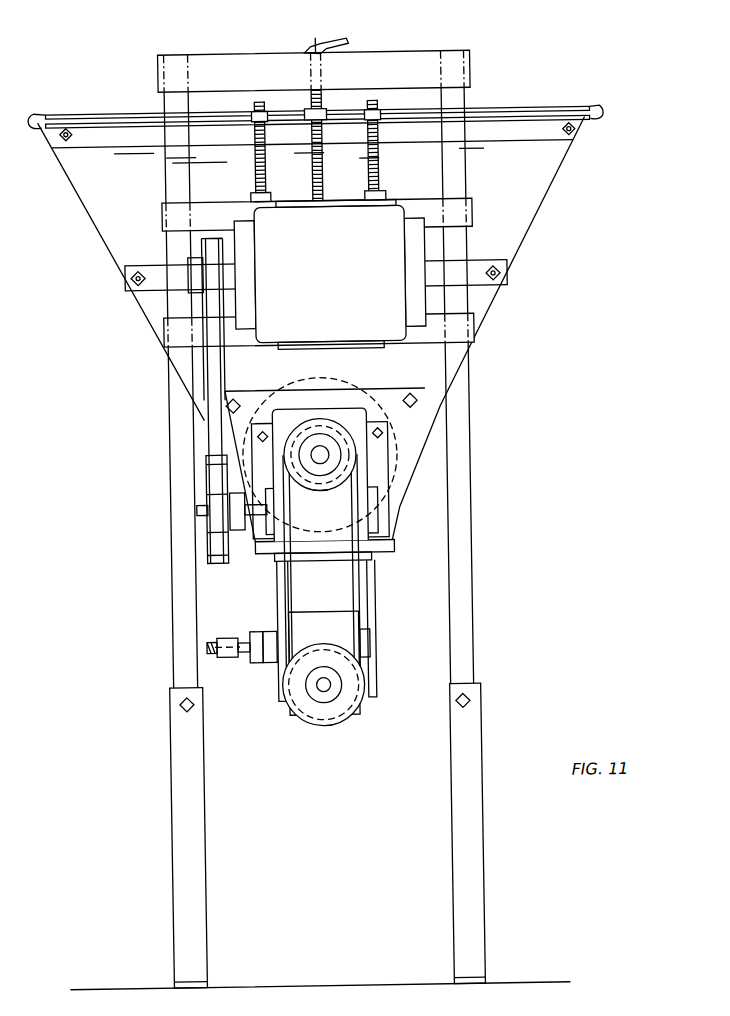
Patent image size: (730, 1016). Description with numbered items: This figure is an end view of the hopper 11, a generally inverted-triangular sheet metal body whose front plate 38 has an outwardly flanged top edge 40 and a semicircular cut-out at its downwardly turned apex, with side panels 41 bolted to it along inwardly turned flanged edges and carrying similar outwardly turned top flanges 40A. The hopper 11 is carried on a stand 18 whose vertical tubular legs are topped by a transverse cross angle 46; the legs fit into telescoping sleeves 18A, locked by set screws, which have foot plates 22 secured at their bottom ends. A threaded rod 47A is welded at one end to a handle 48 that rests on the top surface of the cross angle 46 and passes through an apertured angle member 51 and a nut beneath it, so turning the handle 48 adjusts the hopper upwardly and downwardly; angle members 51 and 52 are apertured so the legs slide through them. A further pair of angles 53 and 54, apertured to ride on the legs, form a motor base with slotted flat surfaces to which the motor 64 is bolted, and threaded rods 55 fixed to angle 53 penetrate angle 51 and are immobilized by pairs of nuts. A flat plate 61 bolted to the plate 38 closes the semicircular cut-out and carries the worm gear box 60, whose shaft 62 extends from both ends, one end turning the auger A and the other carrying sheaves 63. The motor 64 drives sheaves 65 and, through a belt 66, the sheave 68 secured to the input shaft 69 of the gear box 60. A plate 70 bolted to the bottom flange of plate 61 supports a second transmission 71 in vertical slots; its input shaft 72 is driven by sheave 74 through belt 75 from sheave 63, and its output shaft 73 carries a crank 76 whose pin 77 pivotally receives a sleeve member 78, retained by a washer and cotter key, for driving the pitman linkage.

The hopper 11 is at (544, 99).
The stand 18 is at (178, 605).
The telescoping stand sleeve 18A is at (172, 817).
The foot plate 22 is at (185, 977).
The front plate 38 is at (121, 189).
The outwardly flanged top edge 40 is at (572, 110).
The outwardly turned top flange 40A is at (613, 117).
The side panel 41 is at (108, 237).
The transverse cross angle 46 is at (478, 60).
The threaded rod 47A is at (333, 156).
The handle 48 is at (348, 39).
The angle member 51 is at (524, 129).
The angle member 52 is at (512, 277).
The motor base angle 53 is at (478, 214).
The motor base angle 54 is at (478, 332).
The threaded rod 55 is at (262, 170).
The gear box 60 is at (340, 412).
The flat plate 61 is at (402, 423).
The output shaft 62 is at (321, 449).
The sheave 63 is at (312, 485).
The motor 64 is at (333, 305).
The sheave 65 is at (207, 247).
The belt 66 is at (224, 367).
The sheave 68 is at (207, 464).
The input shaft 69 is at (197, 509).
The plate 70 is at (365, 556).
The second transmission 71 is at (329, 617).
The input shaft 72 is at (320, 687).
The output shaft 73 is at (263, 660).
The sheave 74 is at (339, 700).
The belt 75 is at (357, 585).
The crank 76 is at (244, 631).
The pin 77 is at (244, 649).
The sleeve member 78 is at (224, 633).
The auger A is at (391, 415).